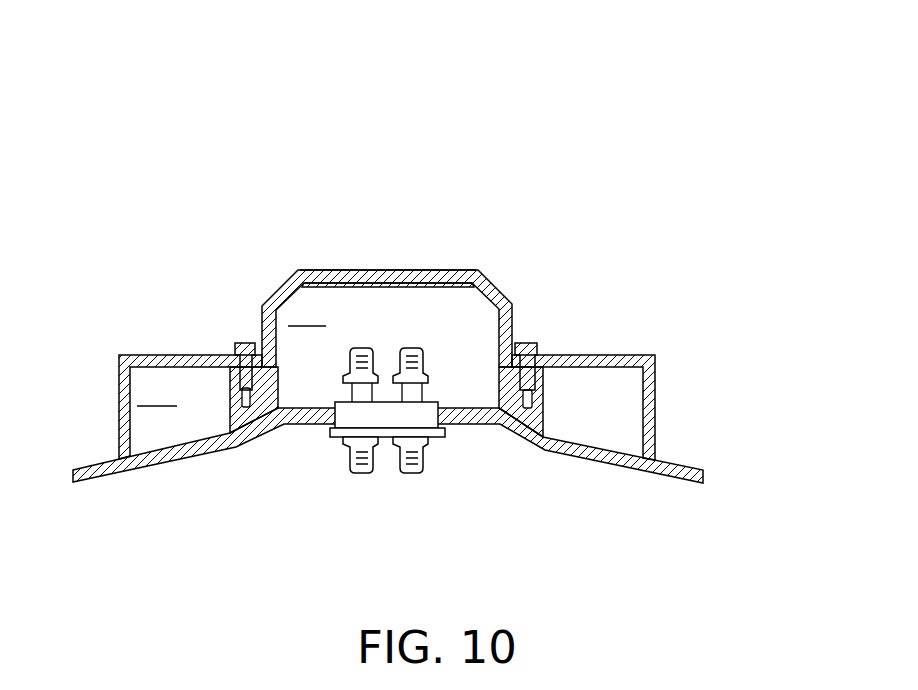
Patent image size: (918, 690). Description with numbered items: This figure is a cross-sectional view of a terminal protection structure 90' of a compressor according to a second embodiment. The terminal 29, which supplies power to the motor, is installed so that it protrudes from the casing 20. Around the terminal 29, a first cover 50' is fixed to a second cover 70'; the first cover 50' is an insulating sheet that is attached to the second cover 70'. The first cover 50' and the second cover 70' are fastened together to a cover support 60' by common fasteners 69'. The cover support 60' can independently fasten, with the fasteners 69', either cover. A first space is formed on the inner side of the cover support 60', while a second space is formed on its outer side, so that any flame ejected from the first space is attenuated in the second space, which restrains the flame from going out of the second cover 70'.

The terminal protection structure 90' is at (430, 294).
The second cover 70' is at (405, 283).
The first cover 50' is at (424, 248).
The fasteners 69' is at (562, 317).
The cover support 60' is at (583, 407).
The casing 20 is at (667, 473).
The terminal 29 is at (440, 498).